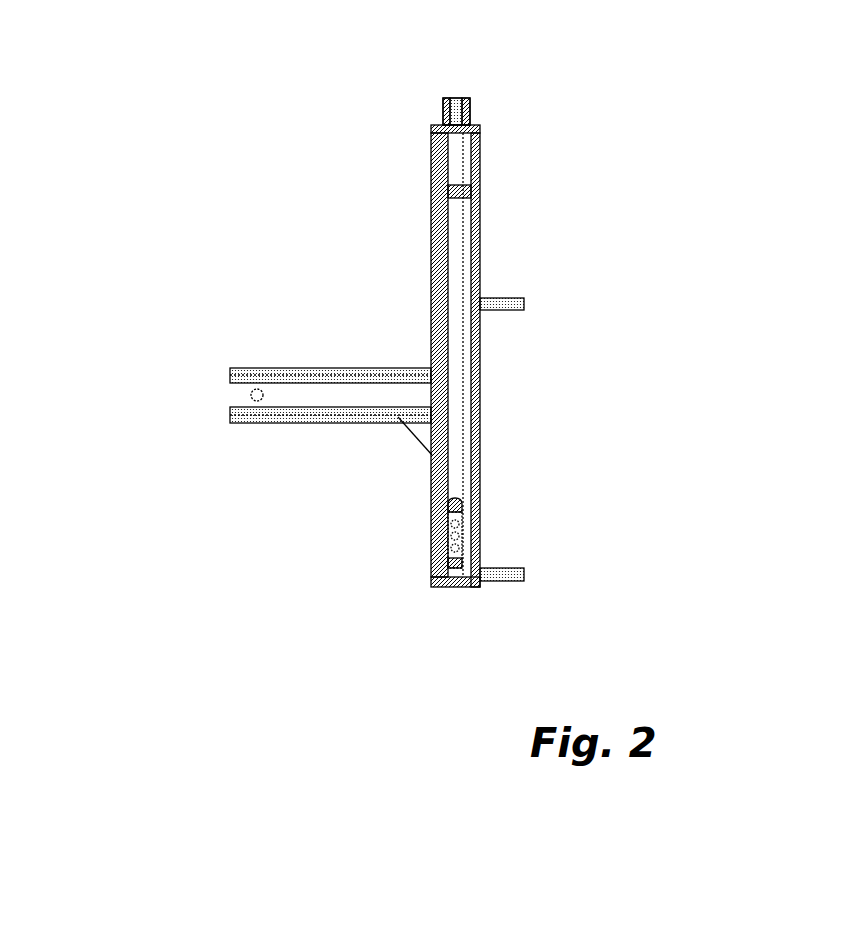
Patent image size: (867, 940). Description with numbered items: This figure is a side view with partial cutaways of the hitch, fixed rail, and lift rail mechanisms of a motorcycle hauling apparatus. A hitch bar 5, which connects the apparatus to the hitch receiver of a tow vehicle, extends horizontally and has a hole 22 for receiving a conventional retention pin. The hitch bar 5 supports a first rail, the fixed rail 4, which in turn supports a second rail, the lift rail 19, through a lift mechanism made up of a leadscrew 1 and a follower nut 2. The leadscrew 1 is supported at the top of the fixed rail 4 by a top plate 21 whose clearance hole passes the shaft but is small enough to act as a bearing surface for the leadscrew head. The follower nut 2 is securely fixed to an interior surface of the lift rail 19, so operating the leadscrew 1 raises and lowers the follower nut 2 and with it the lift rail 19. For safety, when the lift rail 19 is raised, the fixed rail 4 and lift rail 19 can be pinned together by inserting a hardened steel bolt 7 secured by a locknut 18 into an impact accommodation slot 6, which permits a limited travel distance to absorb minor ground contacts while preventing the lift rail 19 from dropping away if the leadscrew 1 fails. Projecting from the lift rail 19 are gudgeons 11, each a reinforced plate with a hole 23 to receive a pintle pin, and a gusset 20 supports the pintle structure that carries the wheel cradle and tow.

The leadscrew 1 is at (468, 106).
The top plate 21 is at (472, 125).
The follower nut 2 is at (472, 190).
The lift rail 19 is at (478, 258).
The fixed rail 4 is at (432, 315).
The gudgeon 11 is at (523, 300).
The hole 23 is at (503, 310).
The hitch bar 5 is at (338, 368).
The hole 22 is at (255, 394).
The gusset 20 is at (423, 434).
The locknut 18 is at (455, 508).
The hardened steel bolt 7 is at (452, 518).
The impact accommodation slot 6 is at (455, 572).